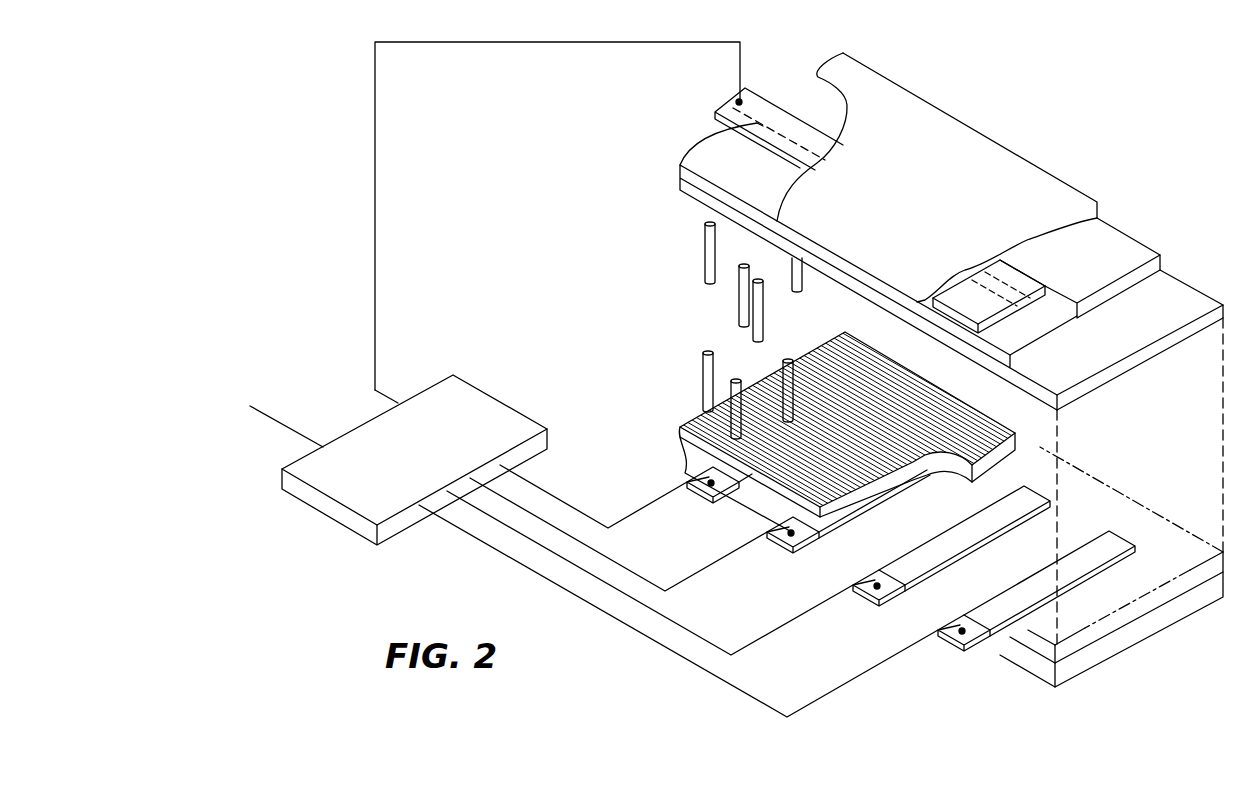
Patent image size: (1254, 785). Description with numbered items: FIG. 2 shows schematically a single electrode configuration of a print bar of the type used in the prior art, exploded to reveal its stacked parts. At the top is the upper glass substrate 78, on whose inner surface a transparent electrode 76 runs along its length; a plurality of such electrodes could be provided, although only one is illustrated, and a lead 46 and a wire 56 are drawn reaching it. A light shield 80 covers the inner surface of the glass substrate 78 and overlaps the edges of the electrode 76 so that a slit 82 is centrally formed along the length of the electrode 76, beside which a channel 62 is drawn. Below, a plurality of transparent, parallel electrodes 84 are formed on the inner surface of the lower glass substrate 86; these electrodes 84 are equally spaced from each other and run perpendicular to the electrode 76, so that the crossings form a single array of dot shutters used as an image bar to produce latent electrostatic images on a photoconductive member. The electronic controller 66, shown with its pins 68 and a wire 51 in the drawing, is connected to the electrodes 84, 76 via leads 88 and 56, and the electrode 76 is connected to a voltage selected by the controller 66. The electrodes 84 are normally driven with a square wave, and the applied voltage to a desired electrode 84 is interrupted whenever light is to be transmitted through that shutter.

The lead 46 is at (763, 126).
The wire 51 is at (290, 427).
The lead 56 is at (375, 123).
The channel 62 is at (1040, 258).
The electronic controller 66 is at (478, 348).
The pins 68 is at (708, 363).
The transparent electrode 76 is at (768, 95).
The upper glass substrate 78 is at (1060, 197).
The light shield 80 is at (985, 318).
The slit 82 is at (1007, 263).
The transparent parallel electrodes 84 is at (968, 620).
The lower glass substrate 86 is at (1113, 527).
The leads 88 is at (530, 539).